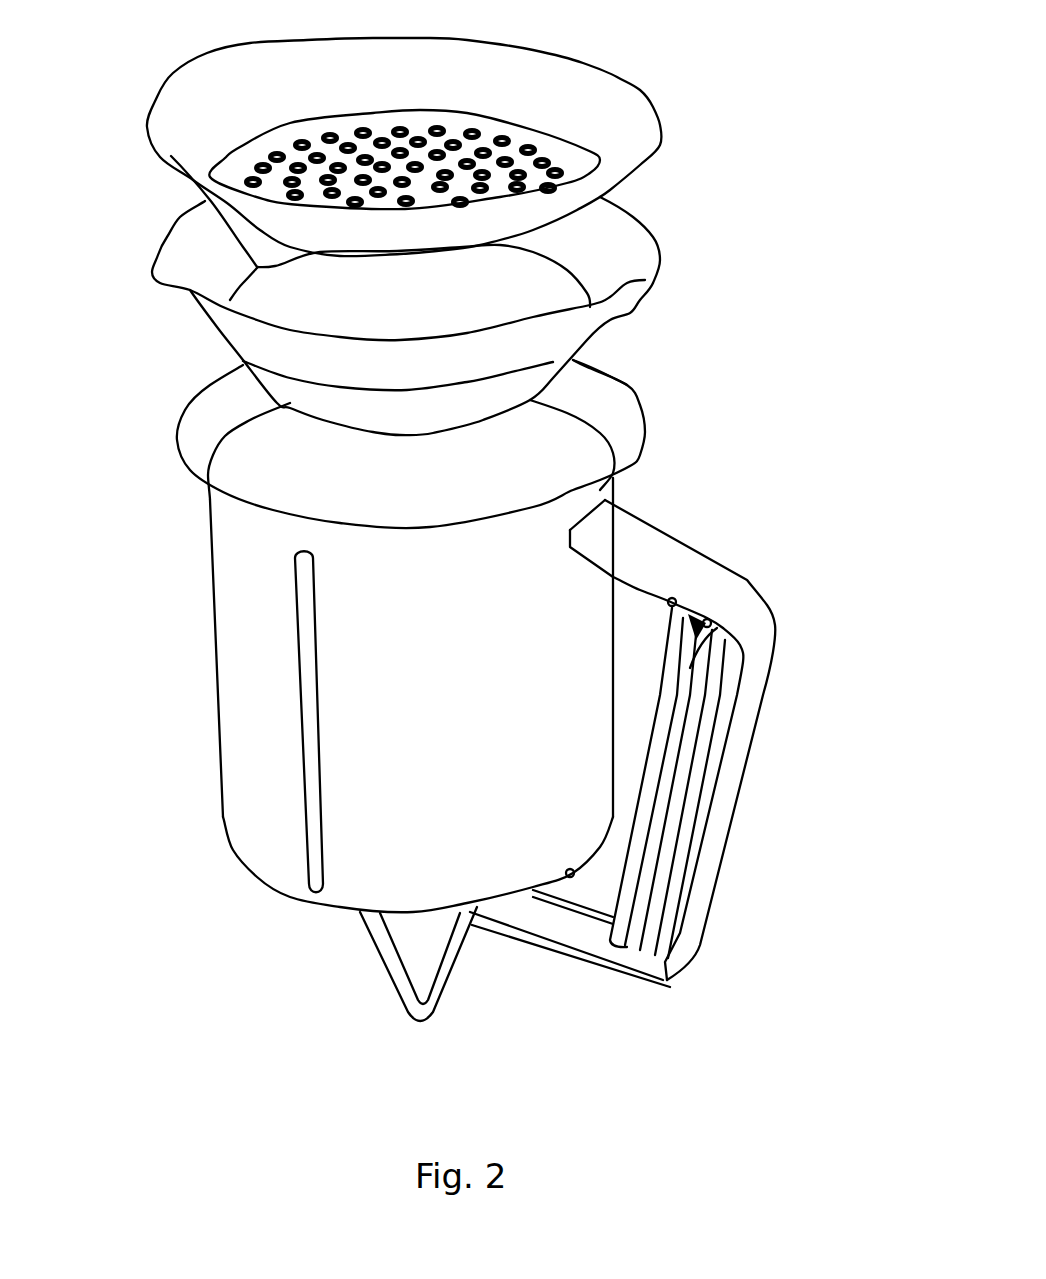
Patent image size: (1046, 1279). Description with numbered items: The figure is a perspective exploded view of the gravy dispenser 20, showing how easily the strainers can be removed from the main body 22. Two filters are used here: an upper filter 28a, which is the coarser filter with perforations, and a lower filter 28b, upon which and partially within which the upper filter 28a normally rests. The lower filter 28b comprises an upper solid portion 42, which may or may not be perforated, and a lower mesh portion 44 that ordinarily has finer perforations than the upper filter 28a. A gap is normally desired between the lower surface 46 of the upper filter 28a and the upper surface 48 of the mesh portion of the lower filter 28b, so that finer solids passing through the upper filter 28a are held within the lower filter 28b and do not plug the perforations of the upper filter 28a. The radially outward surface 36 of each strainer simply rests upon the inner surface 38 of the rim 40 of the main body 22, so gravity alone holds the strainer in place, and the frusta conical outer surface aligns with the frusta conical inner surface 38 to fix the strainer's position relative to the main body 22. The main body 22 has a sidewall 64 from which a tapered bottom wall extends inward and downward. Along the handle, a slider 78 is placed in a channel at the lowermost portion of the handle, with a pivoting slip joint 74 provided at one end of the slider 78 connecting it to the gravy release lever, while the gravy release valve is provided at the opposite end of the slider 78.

The gravy dispenser 20 is at (750, 364).
The main body 22 is at (212, 632).
The upper filter 28a is at (613, 78).
The lower filter 28b is at (657, 240).
The radially outward surface 36 is at (633, 167).
The inner surface 38 is at (625, 436).
The rim 40 is at (207, 475).
The upper solid portion 42 is at (650, 288).
The lower mesh portion 44 is at (623, 387).
The lower surface 46 is at (197, 208).
The upper surface 48 is at (250, 297).
The sidewall 64 is at (218, 736).
The pivoting slip joint 74 is at (667, 980).
The slider 78 is at (560, 930).